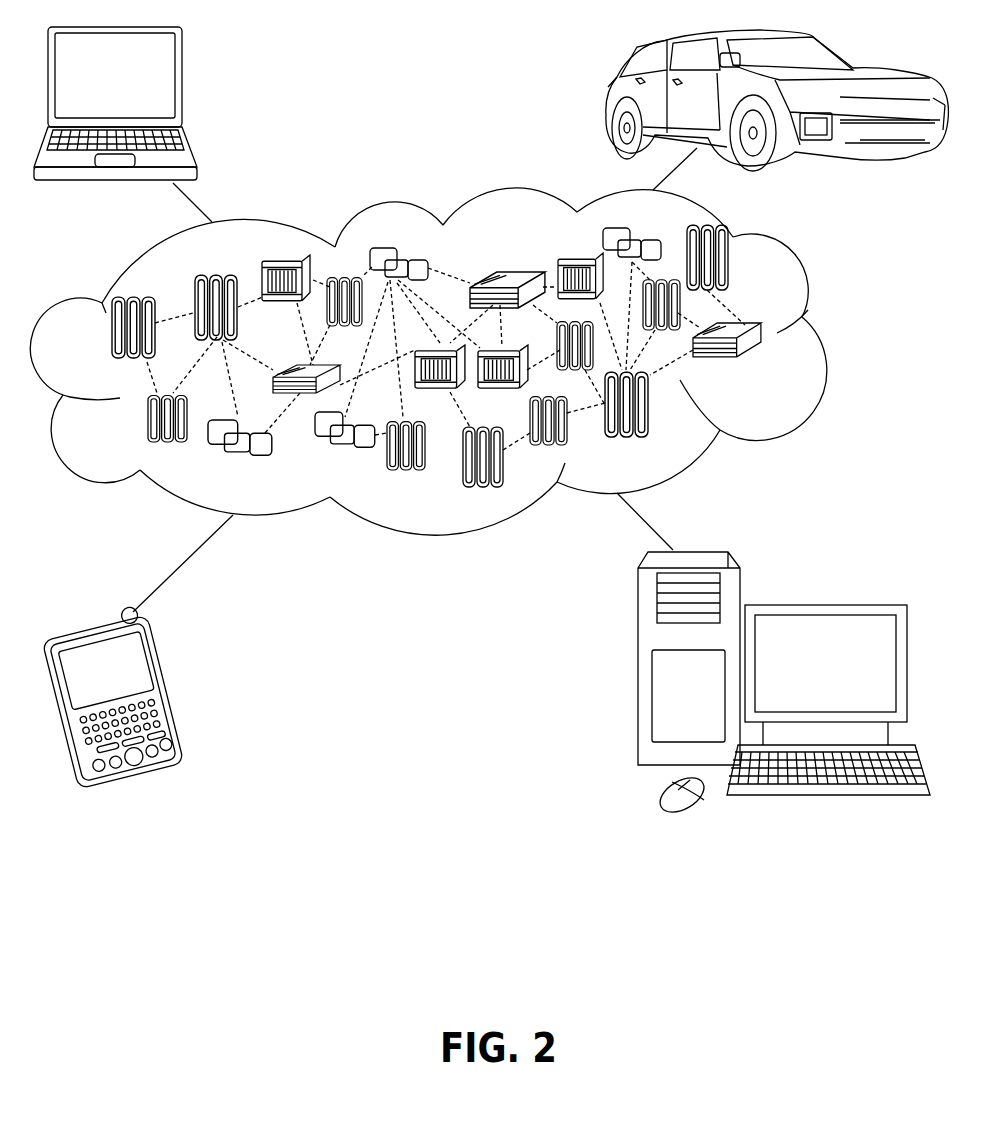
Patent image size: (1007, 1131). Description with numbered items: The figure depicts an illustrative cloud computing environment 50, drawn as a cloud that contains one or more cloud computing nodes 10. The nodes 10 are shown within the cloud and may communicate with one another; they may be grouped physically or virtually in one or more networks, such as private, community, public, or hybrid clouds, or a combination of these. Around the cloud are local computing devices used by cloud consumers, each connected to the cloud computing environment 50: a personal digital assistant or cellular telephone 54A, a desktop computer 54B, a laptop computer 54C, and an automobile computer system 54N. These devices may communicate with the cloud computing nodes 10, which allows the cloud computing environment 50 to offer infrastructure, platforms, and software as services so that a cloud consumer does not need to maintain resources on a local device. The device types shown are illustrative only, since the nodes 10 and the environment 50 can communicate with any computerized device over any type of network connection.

The cloud computing node 10 is at (767, 365).
The cloud computing environment 50 is at (823, 338).
The personal digital assistant (PDA) or cellular telephone 54A is at (172, 690).
The desktop computer 54B is at (820, 605).
The laptop computer 54C is at (182, 83).
The automobile computer system 54N is at (610, 103).